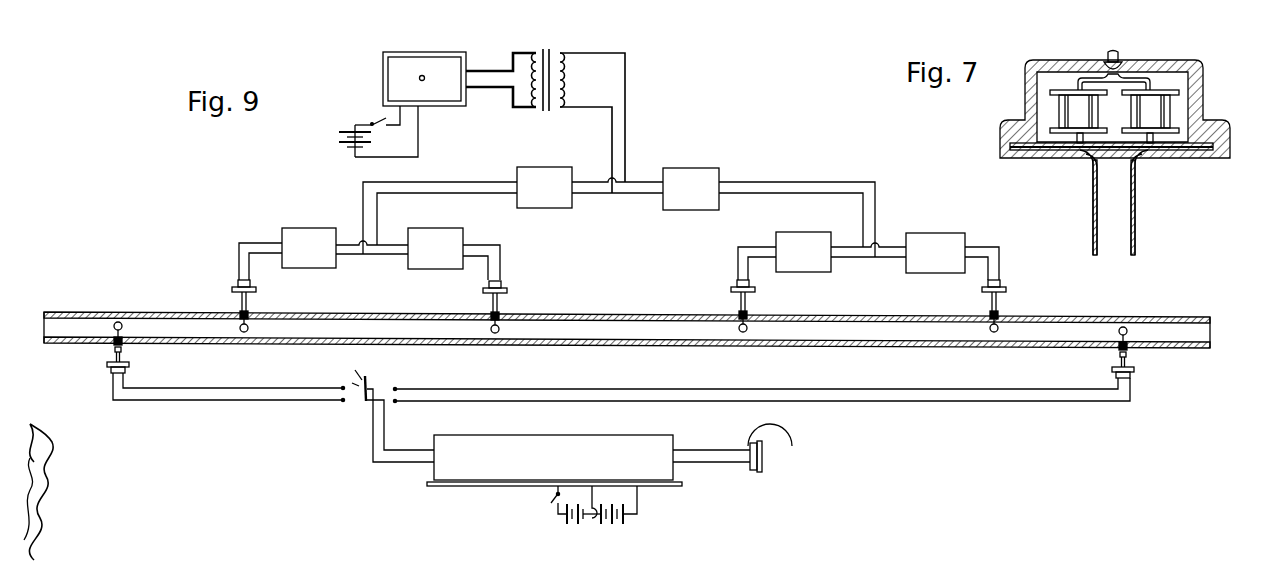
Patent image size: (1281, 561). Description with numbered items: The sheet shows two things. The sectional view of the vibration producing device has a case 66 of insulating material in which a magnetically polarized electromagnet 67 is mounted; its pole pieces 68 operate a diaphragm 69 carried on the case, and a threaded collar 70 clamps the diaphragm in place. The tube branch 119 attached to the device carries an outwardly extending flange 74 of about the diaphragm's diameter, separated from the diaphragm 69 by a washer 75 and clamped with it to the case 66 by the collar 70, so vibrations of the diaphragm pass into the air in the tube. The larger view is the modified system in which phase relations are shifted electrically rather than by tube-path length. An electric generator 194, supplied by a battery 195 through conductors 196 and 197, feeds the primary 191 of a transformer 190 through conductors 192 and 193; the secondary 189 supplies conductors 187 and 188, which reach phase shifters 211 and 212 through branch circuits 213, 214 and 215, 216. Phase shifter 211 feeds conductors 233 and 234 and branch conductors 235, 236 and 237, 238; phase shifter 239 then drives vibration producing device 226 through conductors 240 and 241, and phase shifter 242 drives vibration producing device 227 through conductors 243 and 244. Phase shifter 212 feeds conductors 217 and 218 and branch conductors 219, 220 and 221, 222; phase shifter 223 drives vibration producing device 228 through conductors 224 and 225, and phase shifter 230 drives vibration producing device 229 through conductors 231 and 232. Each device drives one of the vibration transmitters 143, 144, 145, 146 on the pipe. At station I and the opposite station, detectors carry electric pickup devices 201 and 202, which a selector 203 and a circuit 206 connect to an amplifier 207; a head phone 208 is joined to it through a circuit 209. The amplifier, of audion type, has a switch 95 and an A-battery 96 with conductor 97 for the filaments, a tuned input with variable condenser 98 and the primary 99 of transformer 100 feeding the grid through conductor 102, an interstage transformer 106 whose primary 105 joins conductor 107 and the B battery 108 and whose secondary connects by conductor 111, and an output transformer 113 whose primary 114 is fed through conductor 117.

In FIG. 9, the electric generator 194 is at (437, 70).
In FIG. 9, the conductor 192 is at (489, 69).
In FIG. 9, the conductor 193 is at (489, 89).
In FIG. 9, the primary 191 is at (527, 52).
In FIG. 9, the transformer 190 is at (547, 50).
In FIG. 9, the secondary 189 is at (567, 79).
In FIG. 9, the conductor 187 is at (627, 138).
In FIG. 9, the conductor 188 is at (612, 125).
In FIG. 9, the conductor 196 is at (364, 120).
In FIG. 9, the battery 195 is at (342, 144).
In FIG. 9, the conductor 197 is at (419, 140).
In FIG. 9, the conductor 233 is at (469, 181).
In FIG. 9, the conductor 234 is at (471, 194).
In FIG. 9, the branch conductor 235 is at (357, 242).
In FIG. 9, the branch conductor 236 is at (353, 256).
In FIG. 9, the branch conductor 237 is at (386, 244).
In FIG. 9, the branch conductor 238 is at (392, 256).
In FIG. 9, the phase shifter 211 is at (543, 178).
In FIG. 9, the phase shifter 212 is at (705, 179).
In FIG. 9, the branch circuit 213 is at (590, 196).
In FIG. 9, the branch circuit 214 is at (598, 182).
In FIG. 9, the branch circuit 215 is at (645, 196).
In FIG. 9, the branch circuit 216 is at (650, 180).
In FIG. 9, the conductor 217 is at (779, 181).
In FIG. 9, the conductor 218 is at (800, 195).
In FIG. 9, the branch conductor 219 is at (847, 246).
In FIG. 9, the branch conductor 220 is at (850, 259).
In FIG. 9, the branch conductor 221 is at (890, 259).
In FIG. 9, the branch conductor 222 is at (896, 246).
In FIG. 9, the phase shifter 223 is at (793, 244).
In FIG. 9, the conductor 224 is at (738, 262).
In FIG. 9, the conductor 225 is at (752, 273).
In FIG. 9, the vibration producing device 226 is at (234, 287).
In FIG. 9, the vibration producing device 227 is at (482, 290).
In FIG. 9, the vibration producing device 228 is at (733, 291).
In FIG. 9, the vibration producing device 229 is at (1005, 291).
In FIG. 9, the phase shifter 230 is at (946, 241).
In FIG. 9, the conductor 231 is at (1008, 262).
In FIG. 9, the conductor 232 is at (987, 276).
In FIG. 9, the phase shifter 239 is at (302, 242).
In FIG. 9, the conductor 240 is at (238, 244).
In FIG. 9, the conductor 241 is at (262, 256).
In FIG. 9, the phase shifter 242 is at (448, 242).
In FIG. 9, the conductor 243 is at (494, 266).
In FIG. 9, the conductor 244 is at (501, 278).
In FIG. 9, the vibration transmitter 143 is at (244, 334).
In FIG. 9, the vibration transmitter 144 is at (496, 334).
In FIG. 9, the vibration transmitter 145 is at (743, 336).
In FIG. 9, the vibration transmitter 146 is at (995, 338).
In FIG. 9, the electric pickup device 201 is at (112, 376).
In FIG. 9, the electric pickup device 202 is at (1140, 374).
In FIG. 9, the selector 203 is at (372, 384).
In FIG. 9, the circuit 206 is at (414, 452).
In FIG. 9, the amplifier 207 is at (637, 447).
In FIG. 9, the head phone 208 is at (764, 462).
In FIG. 9, the circuit 209 is at (716, 470).
In FIG. 9, the switch 95 is at (552, 498).
In FIG. 9, the conductor 107 is at (640, 501).
In FIG. 9, the A-battery 96 is at (566, 526).
In FIG. 9, the conductor 97 is at (587, 518).
In FIG. 9, the B battery 108 is at (608, 530).
In FIG. 9, the primary 105 is at (648, 551).
In FIG. 9, the transformer 106 is at (668, 560).
In FIG. 9, the conductor 111 is at (728, 551).
In FIG. 9, the conductor 117 is at (821, 552).
In FIG. 9, the primary 114 is at (861, 552).
In FIG. 9, the transformer 113 is at (882, 560).
In FIG. 9, the conductor 102 is at (490, 559).
In FIG. 9, the transformer 100 is at (453, 560).
In FIG. 9, the primary 99 is at (409, 560).
In FIG. 9, the variable condenser 98 is at (344, 560).
In FIG. 9, the station I is at (627, 316).
In FIG. 7, the threaded collar 70 is at (1230, 158).
In FIG. 7, the washer 75 is at (1012, 146).
In FIG. 7, the branch 119 is at (1137, 249).
In FIG. 7, the electromagnet 67 is at (1070, 108).
In FIG. 7, the case 66 is at (1168, 92).
In FIG. 7, the pole pieces 68 is at (1078, 144).
In FIG. 7, the diaphragm 69 is at (1113, 152).
In FIG. 7, the flange 74 is at (1178, 154).